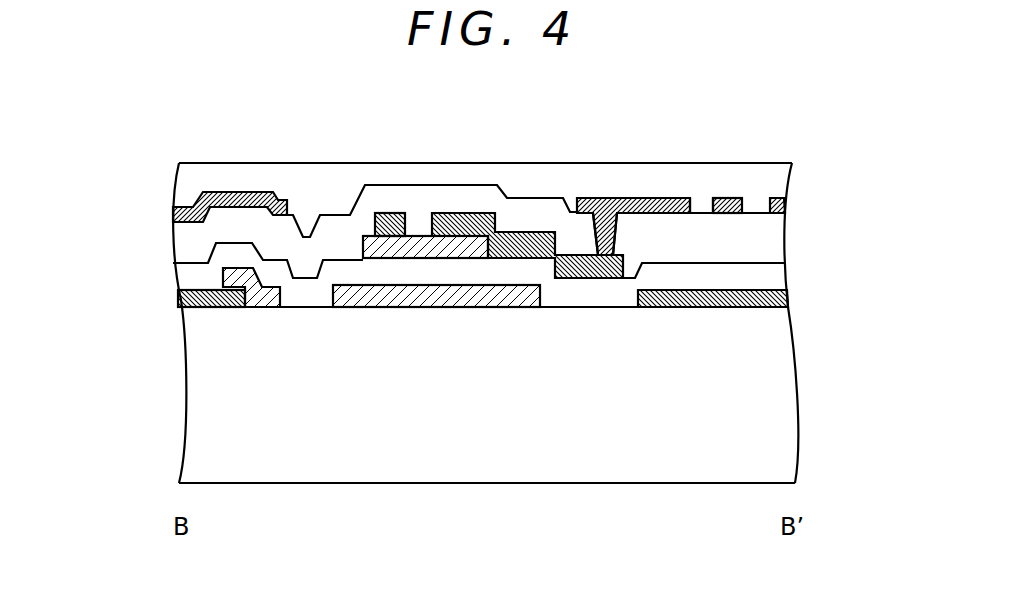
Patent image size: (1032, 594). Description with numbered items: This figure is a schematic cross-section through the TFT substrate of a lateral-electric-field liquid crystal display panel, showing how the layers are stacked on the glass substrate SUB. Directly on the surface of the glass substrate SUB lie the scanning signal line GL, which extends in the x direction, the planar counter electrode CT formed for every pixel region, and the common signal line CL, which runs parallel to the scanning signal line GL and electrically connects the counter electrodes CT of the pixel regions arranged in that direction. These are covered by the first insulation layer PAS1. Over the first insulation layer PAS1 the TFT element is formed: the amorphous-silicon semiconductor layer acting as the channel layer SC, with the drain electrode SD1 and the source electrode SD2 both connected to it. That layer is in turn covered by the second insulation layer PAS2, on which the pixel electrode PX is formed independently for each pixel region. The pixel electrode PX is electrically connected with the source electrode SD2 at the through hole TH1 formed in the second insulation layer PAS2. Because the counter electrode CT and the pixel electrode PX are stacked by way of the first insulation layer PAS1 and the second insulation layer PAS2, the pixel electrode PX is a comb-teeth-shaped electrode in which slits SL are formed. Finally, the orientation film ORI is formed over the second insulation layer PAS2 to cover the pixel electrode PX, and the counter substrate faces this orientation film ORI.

The pixel electrode PX is at (208, 200).
The orientation film ORI is at (303, 187).
The drain electrode SD1 is at (386, 213).
The channel layer SC is at (418, 238).
The source electrode SD2 is at (478, 213).
The through hole TH1 is at (655, 218).
The slit SL is at (703, 207).
The second insulation layer PAS2 is at (197, 239).
The first insulation layer PAS1 is at (197, 278).
The counter electrode CT is at (215, 306).
The common signal line CL is at (258, 305).
The scanning signal line GL is at (400, 305).
The glass substrate SUB is at (559, 466).